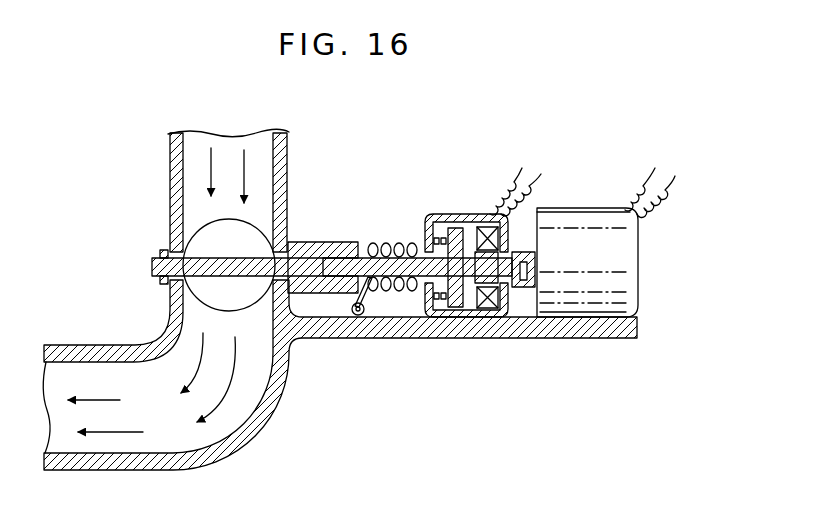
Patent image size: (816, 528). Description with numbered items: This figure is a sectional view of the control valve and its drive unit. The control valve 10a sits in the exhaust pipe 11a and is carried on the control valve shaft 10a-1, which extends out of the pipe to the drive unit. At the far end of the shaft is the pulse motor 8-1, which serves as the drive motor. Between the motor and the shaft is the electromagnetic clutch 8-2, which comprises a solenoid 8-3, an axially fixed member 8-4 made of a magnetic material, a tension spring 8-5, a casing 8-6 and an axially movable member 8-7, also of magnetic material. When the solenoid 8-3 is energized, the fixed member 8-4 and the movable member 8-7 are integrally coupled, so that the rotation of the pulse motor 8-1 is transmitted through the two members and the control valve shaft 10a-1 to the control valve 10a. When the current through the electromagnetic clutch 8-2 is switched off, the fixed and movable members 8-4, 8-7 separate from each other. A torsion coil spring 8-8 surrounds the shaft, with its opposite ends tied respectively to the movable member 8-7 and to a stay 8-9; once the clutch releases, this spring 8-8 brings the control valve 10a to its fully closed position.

The exhaust pipe 11a is at (176, 178).
The control valve 10a is at (201, 233).
The control valve shaft 10a-1 is at (310, 242).
The torsion coil spring 8-8 is at (382, 246).
The stay 8-9 is at (358, 315).
The electromagnetic clutch 8-2 is at (429, 213).
The axially movable member 8-7 is at (459, 232).
The tension spring 8-5 is at (442, 299).
The solenoid 8-3 is at (485, 308).
The casing 8-6 is at (484, 213).
The pulse motor 8-1 is at (593, 208).
The axially fixed member 8-4 is at (518, 285).